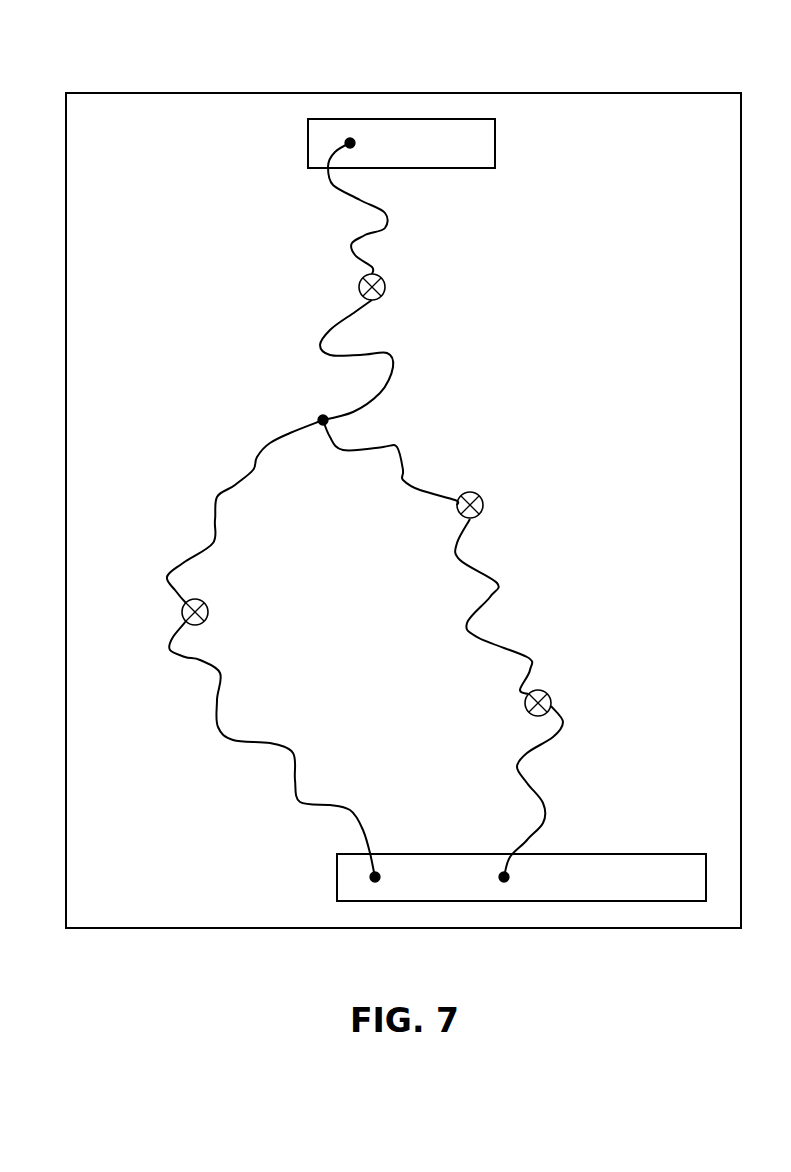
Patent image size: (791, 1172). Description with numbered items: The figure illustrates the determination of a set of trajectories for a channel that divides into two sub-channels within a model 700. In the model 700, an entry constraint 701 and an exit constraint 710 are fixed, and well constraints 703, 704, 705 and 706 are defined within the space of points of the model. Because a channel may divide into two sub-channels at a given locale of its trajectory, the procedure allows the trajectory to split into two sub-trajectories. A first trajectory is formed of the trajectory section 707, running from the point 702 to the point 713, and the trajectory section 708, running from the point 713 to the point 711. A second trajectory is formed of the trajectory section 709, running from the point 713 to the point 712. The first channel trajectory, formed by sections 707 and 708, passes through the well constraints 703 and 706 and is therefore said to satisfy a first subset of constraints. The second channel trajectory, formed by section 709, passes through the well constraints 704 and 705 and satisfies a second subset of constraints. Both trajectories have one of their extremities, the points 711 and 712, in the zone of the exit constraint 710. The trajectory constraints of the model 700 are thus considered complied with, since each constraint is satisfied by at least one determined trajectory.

The model 700 is at (663, 92).
The entry constraint 701 is at (457, 117).
The point 702 is at (348, 130).
The well constraint 703 is at (390, 278).
The well constraint 704 is at (490, 493).
The well constraint 705 is at (560, 688).
The well constraint 706 is at (215, 600).
The trajectory section 707 is at (398, 363).
The trajectory section 708 is at (267, 437).
The trajectory section 709 is at (400, 447).
The exit constraint 710 is at (427, 903).
The point 711 is at (380, 866).
The point 712 is at (505, 890).
The point 713 is at (323, 420).